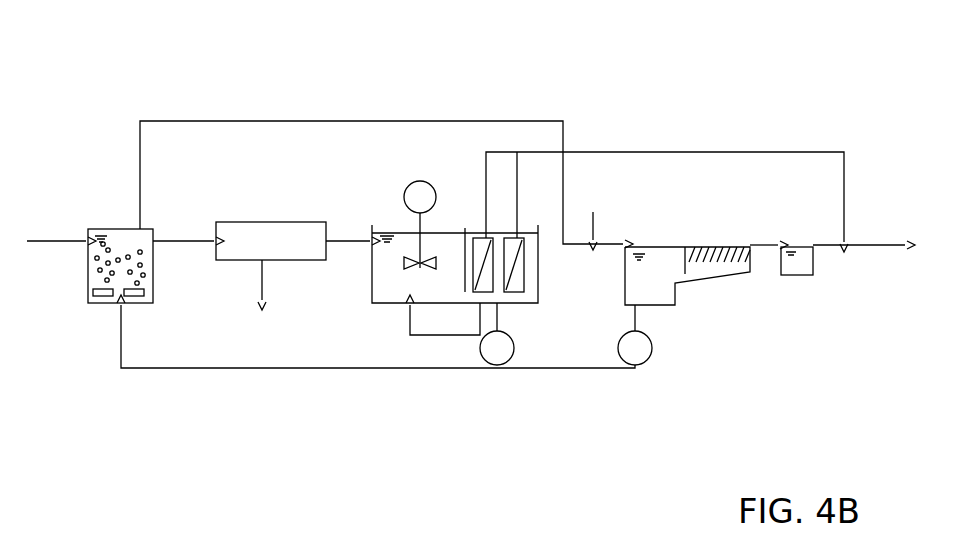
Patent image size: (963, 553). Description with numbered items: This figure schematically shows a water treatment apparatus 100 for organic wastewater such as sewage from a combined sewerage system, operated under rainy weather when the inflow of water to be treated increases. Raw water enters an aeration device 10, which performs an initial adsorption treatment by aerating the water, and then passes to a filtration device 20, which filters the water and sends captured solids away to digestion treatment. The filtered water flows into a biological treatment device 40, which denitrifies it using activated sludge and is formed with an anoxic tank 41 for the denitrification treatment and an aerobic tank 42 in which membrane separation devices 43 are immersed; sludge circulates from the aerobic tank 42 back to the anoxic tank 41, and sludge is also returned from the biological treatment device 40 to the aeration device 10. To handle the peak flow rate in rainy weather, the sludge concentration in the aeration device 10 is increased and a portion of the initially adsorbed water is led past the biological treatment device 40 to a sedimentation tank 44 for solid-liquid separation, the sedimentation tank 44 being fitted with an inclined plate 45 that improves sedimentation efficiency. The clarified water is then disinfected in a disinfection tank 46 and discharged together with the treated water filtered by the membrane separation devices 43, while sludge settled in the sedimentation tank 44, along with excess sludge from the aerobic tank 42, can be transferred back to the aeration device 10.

The water treatment apparatus 100 is at (383, 92).
The aeration device 10 is at (106, 229).
The filtration device 20 is at (271, 221).
The biological treatment device 40 is at (447, 231).
The anoxic tank 41 is at (392, 295).
The aerobic tank 42 is at (523, 298).
The membrane separation devices 43 is at (525, 277).
The sedimentation tank 44 is at (660, 310).
The inclined plate 45 is at (707, 246).
The disinfection tank 46 is at (800, 279).